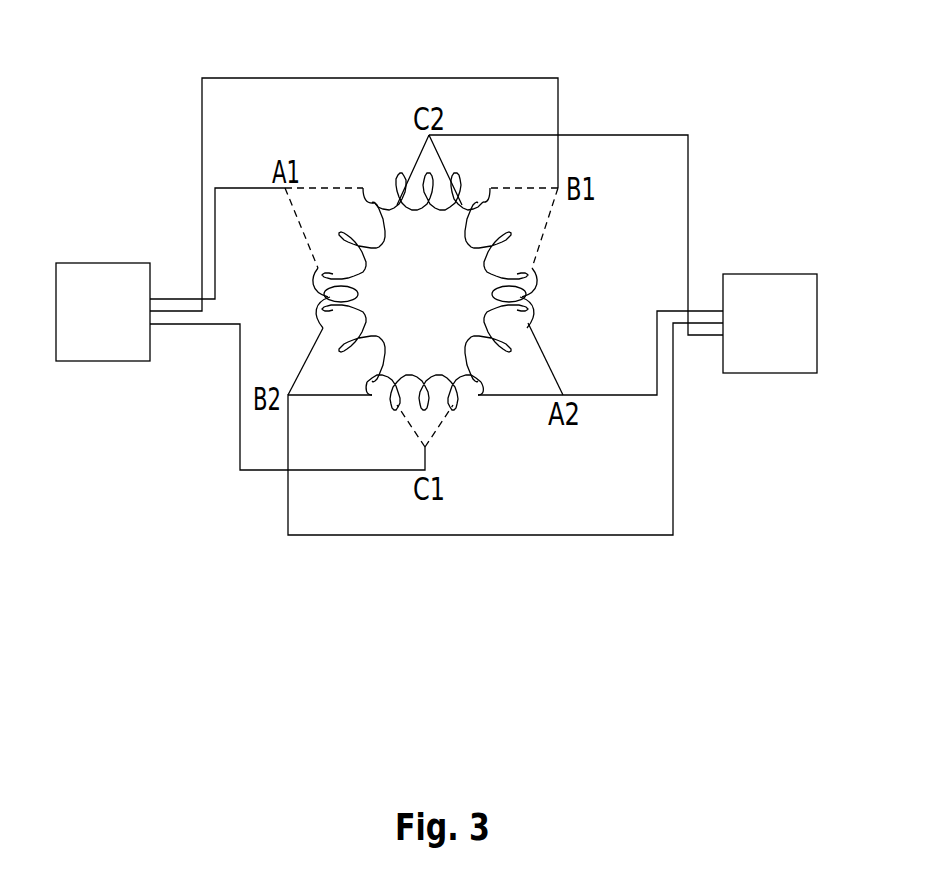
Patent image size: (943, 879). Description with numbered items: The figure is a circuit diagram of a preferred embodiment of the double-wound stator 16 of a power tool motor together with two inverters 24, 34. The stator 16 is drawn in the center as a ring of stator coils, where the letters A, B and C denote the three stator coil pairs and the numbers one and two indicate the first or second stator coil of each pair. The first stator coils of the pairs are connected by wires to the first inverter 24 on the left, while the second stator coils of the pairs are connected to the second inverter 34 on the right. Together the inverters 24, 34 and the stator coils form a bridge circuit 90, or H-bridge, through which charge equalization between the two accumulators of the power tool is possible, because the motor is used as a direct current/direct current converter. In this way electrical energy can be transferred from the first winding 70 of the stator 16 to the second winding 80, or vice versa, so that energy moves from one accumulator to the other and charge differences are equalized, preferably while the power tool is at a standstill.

The double-wound stator 16 is at (421, 332).
The first inverter 24 is at (105, 348).
The second inverter 34 is at (769, 364).
The first winding 70 is at (541, 267).
The second winding 80 is at (411, 150).
The bridge circuit 90 is at (472, 575).